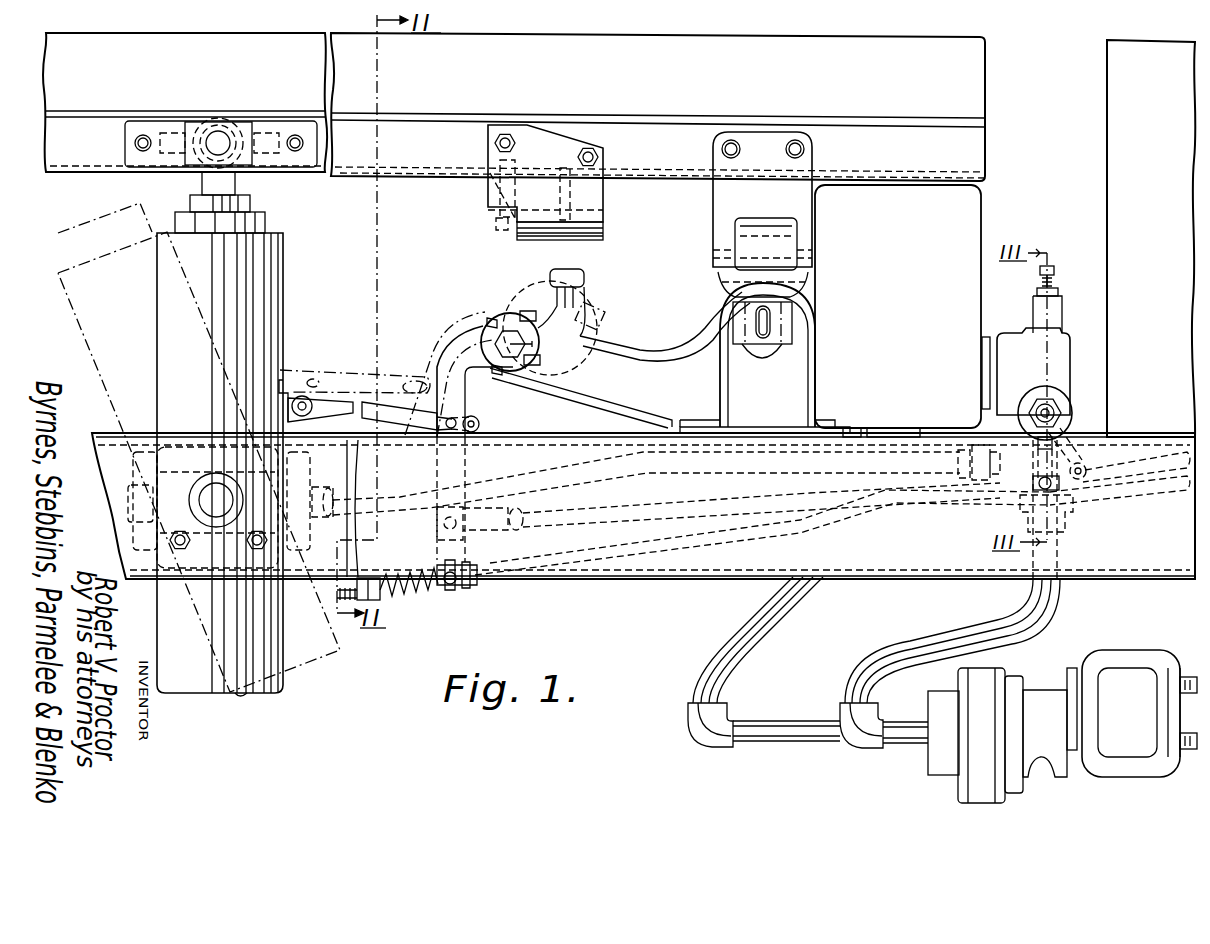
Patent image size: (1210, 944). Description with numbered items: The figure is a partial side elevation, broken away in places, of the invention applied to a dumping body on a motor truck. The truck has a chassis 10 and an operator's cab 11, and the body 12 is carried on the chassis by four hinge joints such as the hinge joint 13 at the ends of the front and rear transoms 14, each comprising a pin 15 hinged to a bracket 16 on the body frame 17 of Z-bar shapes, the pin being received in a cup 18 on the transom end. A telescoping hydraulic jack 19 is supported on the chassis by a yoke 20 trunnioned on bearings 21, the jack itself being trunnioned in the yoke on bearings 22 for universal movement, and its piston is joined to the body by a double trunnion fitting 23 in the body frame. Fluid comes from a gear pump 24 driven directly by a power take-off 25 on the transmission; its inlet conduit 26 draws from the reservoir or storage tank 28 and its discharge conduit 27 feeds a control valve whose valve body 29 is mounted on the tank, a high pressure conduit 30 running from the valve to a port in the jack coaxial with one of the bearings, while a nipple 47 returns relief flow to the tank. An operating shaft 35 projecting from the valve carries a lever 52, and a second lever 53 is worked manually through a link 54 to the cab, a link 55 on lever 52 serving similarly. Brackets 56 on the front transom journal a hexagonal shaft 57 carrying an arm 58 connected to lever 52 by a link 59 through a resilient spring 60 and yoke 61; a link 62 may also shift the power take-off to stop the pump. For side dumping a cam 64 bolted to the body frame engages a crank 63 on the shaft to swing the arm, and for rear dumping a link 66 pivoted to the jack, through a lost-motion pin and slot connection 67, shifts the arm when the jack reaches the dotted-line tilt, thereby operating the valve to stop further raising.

The chassis 10 is at (650, 566).
The operator's cab 11 is at (1118, 83).
The body 12 is at (970, 83).
The hinge joint 13 is at (724, 224).
The transom 14 is at (802, 317).
The pin 15 is at (772, 354).
The bracket 16 is at (728, 188).
The body frame 17 is at (668, 163).
The cup 18 is at (797, 282).
The telescoping hydraulic jack 19 is at (270, 312).
The yoke 20 is at (195, 470).
The bearings 21 is at (217, 472).
The bearings 22 is at (127, 498).
The double trunnion fitting 23 is at (248, 166).
The pump 24 is at (1011, 662).
The power take-off 25 is at (1113, 683).
The inlet conduit 26 is at (760, 727).
The discharge conduit 27 is at (897, 727).
The reservoir or storage tank 28 is at (968, 225).
The valve body 29 is at (1101, 373).
The high pressure conduit 30 is at (681, 466).
The operating shaft 35 is at (1055, 408).
The nipple 47 is at (988, 336).
The lever 52 is at (1040, 461).
The lever 53 is at (1073, 450).
The link 54 is at (1161, 435).
The link 55 is at (1146, 482).
The brackets 56 is at (639, 352).
The hexagonal shaft 57 is at (512, 325).
The arm 58 is at (458, 398).
The link 59 is at (725, 537).
The spring 60 is at (416, 597).
The yoke 61 is at (453, 593).
The link 62 is at (763, 497).
The crank 63 is at (573, 273).
The cam 64 is at (540, 234).
The link 66 is at (322, 405).
The pin and slot connection 67 is at (479, 423).